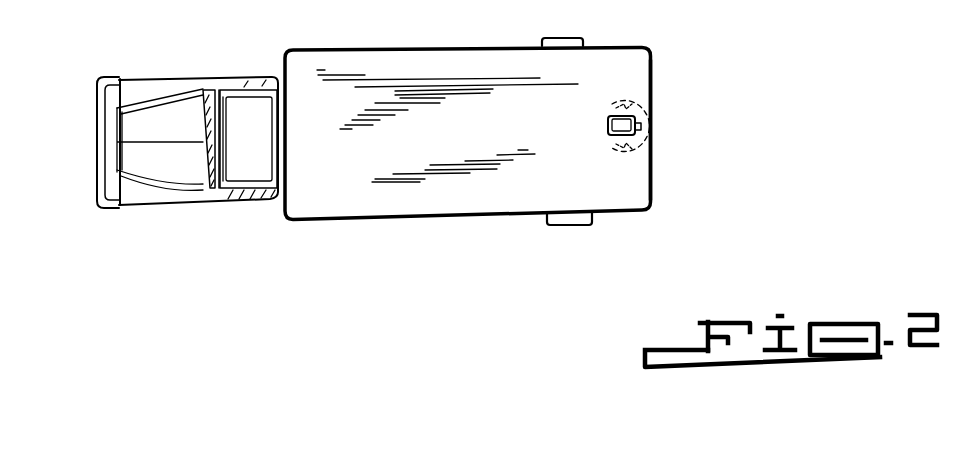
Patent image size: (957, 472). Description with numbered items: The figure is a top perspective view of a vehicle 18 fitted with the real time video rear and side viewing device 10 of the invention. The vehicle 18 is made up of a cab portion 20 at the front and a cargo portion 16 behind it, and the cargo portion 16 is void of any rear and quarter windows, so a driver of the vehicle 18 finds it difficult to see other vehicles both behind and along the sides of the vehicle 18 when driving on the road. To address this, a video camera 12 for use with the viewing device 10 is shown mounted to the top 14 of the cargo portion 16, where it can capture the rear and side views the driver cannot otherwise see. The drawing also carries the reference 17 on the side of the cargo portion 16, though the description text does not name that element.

The real time video rear and side viewing device 10 is at (447, 114).
The video camera 12 is at (610, 132).
The top 14 is at (362, 178).
The cargo portion 16 is at (644, 50).
The side wall of housing 17 is at (653, 167).
The vehicle 18 is at (344, 93).
The cab portion 20 is at (157, 88).